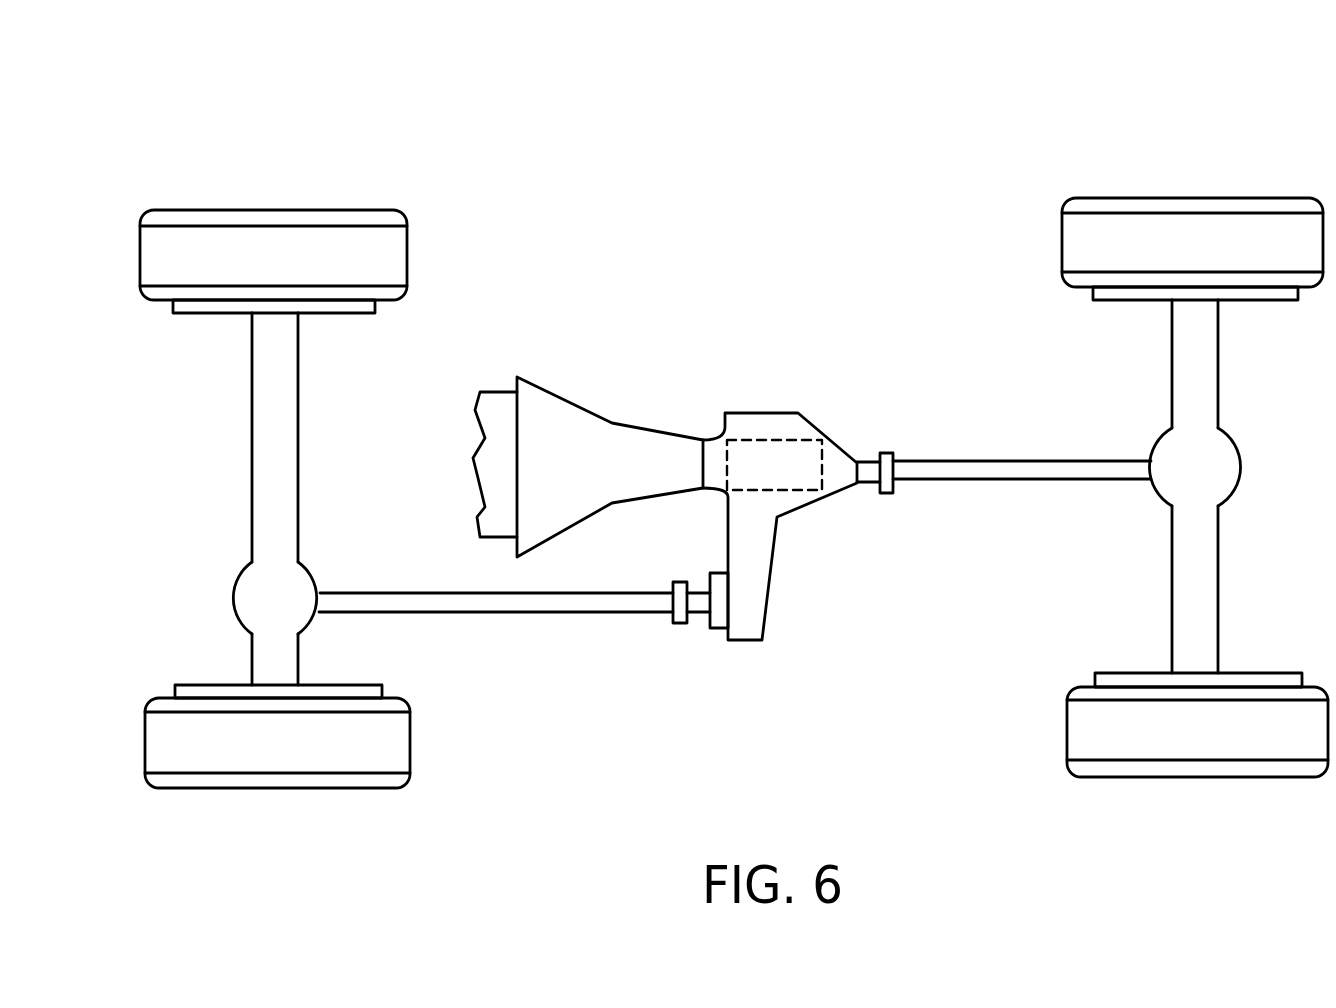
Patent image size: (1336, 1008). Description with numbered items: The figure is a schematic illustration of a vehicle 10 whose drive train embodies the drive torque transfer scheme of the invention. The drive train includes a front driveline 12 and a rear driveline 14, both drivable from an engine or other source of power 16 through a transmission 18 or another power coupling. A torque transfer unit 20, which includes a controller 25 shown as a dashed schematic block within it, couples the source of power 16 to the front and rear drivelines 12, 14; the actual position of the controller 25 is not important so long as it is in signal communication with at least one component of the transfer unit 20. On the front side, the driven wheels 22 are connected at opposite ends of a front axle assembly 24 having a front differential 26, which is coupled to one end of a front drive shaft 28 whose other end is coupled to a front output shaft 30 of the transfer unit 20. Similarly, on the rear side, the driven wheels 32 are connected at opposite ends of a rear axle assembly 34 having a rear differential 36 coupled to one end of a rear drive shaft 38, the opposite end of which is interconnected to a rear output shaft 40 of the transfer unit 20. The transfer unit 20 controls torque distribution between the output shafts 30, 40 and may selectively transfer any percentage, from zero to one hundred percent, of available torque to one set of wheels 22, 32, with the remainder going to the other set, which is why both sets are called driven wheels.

The vehicle 10 is at (242, 152).
The front driveline 12 is at (337, 498).
The rear driveline 14 is at (1050, 438).
The engine or other source of power 16 is at (488, 477).
The transmission 18 is at (623, 495).
The torque transfer unit 20 is at (780, 502).
The driven wheels 22 is at (207, 238).
The front axle assembly 24 is at (253, 432).
The controller 25 is at (777, 440).
The front differential 26 is at (238, 601).
The front drive shaft 28 is at (607, 603).
The front output shaft 30 is at (690, 612).
The driven wheels 32 is at (1173, 222).
The rear axle assembly 34 is at (1213, 385).
The rear differential 36 is at (1232, 469).
The rear drive shaft 38 is at (1012, 482).
The rear output shaft 40 is at (873, 462).